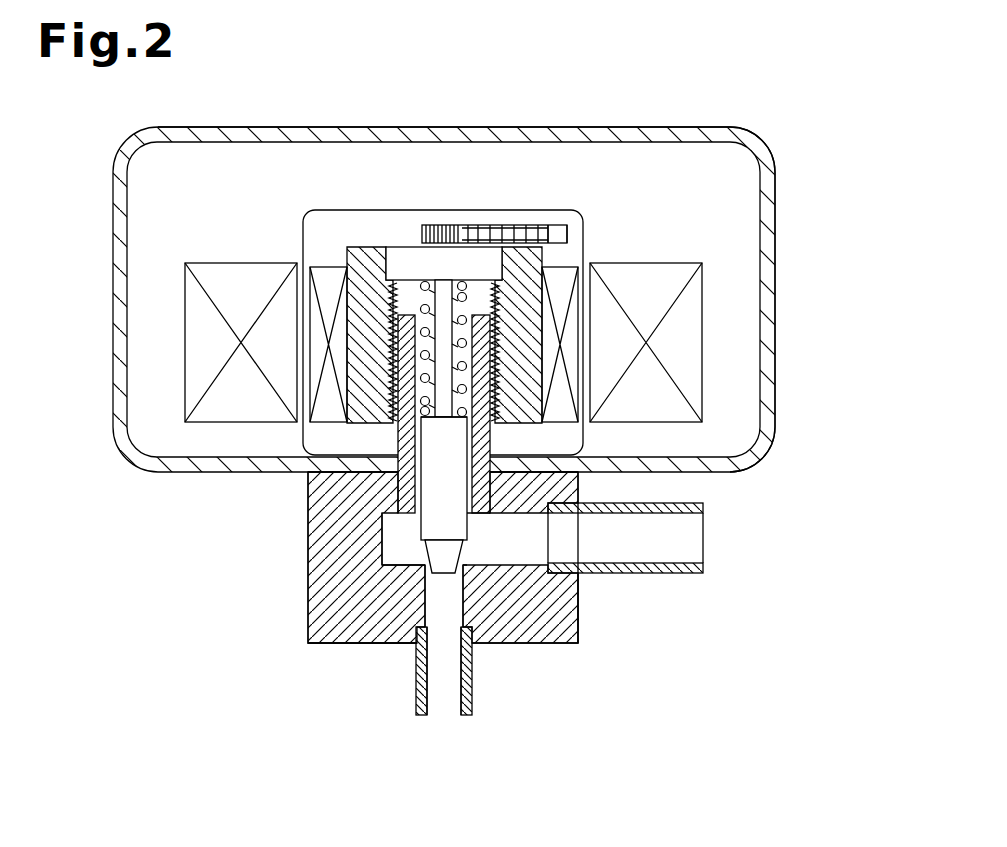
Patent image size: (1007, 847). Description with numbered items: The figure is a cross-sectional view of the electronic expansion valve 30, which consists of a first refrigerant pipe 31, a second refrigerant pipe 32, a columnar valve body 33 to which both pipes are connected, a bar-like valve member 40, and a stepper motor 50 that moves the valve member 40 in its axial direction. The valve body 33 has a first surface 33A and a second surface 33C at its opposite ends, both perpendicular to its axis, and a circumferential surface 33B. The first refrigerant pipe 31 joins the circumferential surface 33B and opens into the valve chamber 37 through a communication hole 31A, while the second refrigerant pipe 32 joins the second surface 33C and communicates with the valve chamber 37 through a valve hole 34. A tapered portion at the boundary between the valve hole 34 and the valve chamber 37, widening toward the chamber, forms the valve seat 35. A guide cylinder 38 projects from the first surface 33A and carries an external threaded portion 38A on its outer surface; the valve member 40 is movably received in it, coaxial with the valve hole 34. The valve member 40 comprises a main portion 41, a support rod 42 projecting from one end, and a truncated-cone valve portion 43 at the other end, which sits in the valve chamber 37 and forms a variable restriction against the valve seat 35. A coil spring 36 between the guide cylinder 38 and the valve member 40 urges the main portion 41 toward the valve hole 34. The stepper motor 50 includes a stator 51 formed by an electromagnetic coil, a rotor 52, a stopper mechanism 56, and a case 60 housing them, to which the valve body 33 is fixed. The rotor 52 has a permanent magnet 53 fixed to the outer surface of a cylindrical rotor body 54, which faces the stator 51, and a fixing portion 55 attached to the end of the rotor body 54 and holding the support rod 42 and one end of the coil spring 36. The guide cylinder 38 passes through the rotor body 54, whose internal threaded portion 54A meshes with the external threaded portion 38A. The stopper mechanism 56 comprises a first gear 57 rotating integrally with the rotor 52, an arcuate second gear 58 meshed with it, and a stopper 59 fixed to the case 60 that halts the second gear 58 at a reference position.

The electronic expansion valve 30 is at (110, 106).
The first refrigerant pipe 31 is at (692, 573).
The communication hole 31A is at (540, 553).
The second refrigerant pipe 32 is at (473, 700).
The valve body 33 is at (578, 635).
The first surface 33A is at (568, 463).
The circumferential surface 33B is at (579, 598).
The second surface 33C is at (357, 647).
The valve hole 34 is at (463, 612).
The valve seat 35 is at (423, 573).
The coil spring 36 is at (425, 305).
The valve chamber 37 is at (398, 553).
The guide cylinder 38 is at (482, 368).
The external threaded portion 38A is at (400, 421).
The valve member 40 is at (480, 543).
The main portion 41 is at (430, 490).
The support rod 42 is at (460, 403).
The valve portion 43 is at (423, 550).
The stepper motor 50 is at (820, 329).
The stator 51 is at (242, 262).
The rotor 52 is at (290, 183).
The permanent magnet 53 is at (330, 265).
The rotor body 54 is at (372, 246).
The internal threaded portion 54A is at (480, 308).
The fixing portion 55 is at (399, 246).
The stopper mechanism 56 is at (585, 183).
The first gear 57 is at (442, 222).
The second gear 58 is at (507, 222).
The stopper 59 is at (557, 222).
The case 60 is at (775, 248).